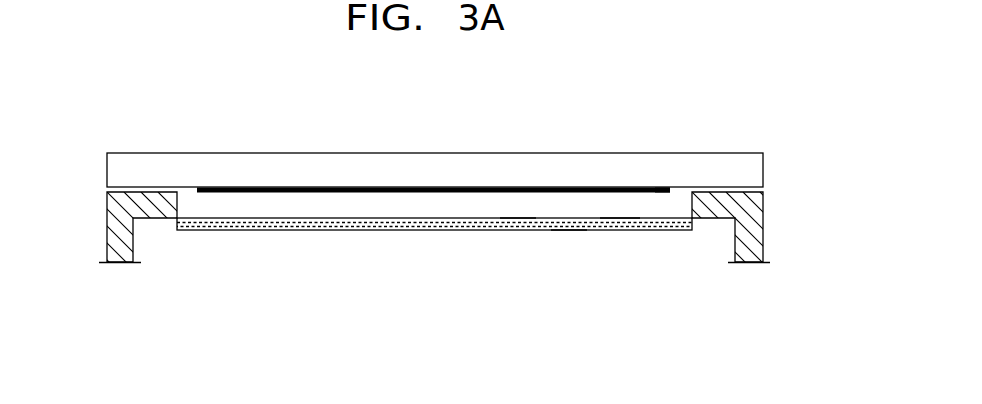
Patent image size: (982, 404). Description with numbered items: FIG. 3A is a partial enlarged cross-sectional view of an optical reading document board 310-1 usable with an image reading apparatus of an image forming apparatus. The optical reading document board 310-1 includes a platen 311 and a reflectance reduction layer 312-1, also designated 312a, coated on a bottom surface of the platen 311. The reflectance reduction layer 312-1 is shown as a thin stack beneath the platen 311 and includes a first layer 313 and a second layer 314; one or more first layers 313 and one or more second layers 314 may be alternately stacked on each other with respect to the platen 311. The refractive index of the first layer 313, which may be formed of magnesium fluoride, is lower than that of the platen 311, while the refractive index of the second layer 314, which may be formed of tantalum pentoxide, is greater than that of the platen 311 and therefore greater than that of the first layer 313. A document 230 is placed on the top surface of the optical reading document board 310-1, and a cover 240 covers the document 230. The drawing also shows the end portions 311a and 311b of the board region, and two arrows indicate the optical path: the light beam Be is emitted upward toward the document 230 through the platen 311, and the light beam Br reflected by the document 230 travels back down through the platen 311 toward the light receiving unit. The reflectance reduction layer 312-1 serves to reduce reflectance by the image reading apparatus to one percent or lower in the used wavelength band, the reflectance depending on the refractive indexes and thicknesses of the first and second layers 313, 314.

The document 230 is at (388, 187).
The cover 240 is at (462, 168).
The end portion of film 311b is at (654, 192).
The platen 311 is at (438, 208).
The first layer 313 is at (518, 230).
The second layer 314 is at (569, 230).
The end portion of substrate 311a is at (607, 217).
The reflectance reduction layer 312-1 is at (583, 282).
The optical reading document board 310-1 is at (558, 335).
The reflectance reduction layer 312a is at (584, 331).
The light beam Be is at (265, 200).
The light beam Br is at (298, 197).